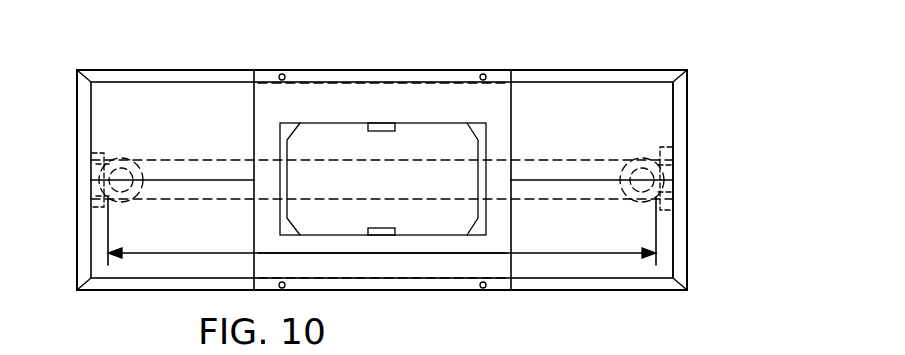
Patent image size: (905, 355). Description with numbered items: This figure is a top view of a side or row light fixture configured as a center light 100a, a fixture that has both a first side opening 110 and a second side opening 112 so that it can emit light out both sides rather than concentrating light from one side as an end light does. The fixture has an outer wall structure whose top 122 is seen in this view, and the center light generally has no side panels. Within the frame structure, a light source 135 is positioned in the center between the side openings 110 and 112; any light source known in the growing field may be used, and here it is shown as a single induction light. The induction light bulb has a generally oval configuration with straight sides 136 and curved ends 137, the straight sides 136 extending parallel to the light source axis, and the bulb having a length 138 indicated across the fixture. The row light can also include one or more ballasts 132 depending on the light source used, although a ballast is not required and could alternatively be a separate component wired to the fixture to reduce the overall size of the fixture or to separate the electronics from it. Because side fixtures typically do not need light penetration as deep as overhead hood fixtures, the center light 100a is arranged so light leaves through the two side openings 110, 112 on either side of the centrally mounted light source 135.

The center light 100a is at (703, 92).
The first side opening 110 is at (622, 290).
The second side opening 112 is at (592, 68).
The top 122 is at (657, 133).
The ballast 132 is at (423, 140).
The light source 135 is at (190, 197).
The straight sides 136 is at (577, 168).
The curved ends 137 is at (118, 158).
The length 138 is at (343, 255).